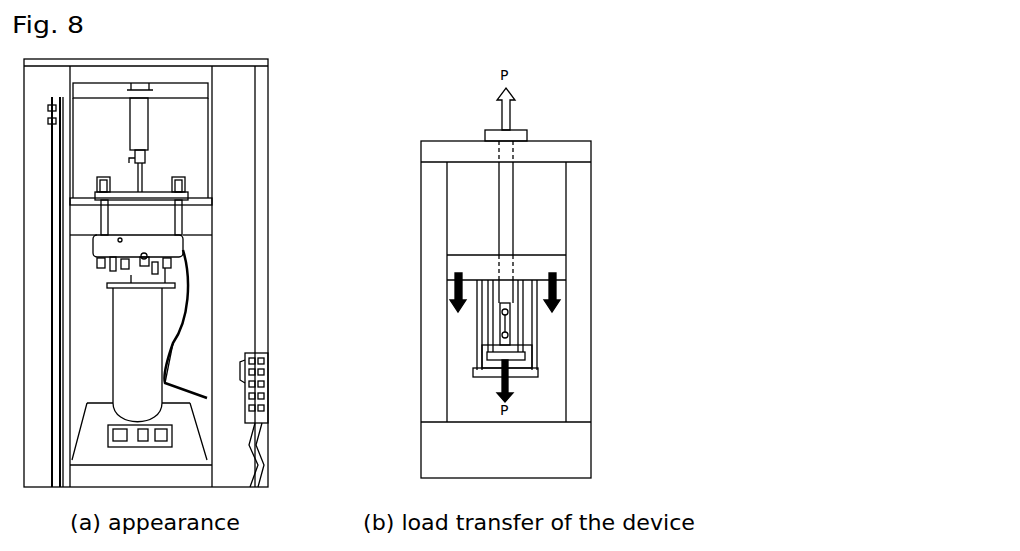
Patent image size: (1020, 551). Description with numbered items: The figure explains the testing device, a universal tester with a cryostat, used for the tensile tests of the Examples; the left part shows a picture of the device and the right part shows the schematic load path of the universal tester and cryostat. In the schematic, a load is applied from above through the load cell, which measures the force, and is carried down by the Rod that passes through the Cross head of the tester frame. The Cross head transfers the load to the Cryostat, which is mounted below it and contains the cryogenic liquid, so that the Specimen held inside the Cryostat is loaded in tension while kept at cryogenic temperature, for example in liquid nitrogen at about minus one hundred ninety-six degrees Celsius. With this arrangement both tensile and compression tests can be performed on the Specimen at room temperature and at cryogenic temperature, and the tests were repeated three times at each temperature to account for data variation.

The rod Rod is at (502, 210).
The element load cell is at (508, 130).
The cross head Cross head is at (483, 262).
The specimen Specimen is at (500, 315).
The cryostat Cryostat is at (475, 342).